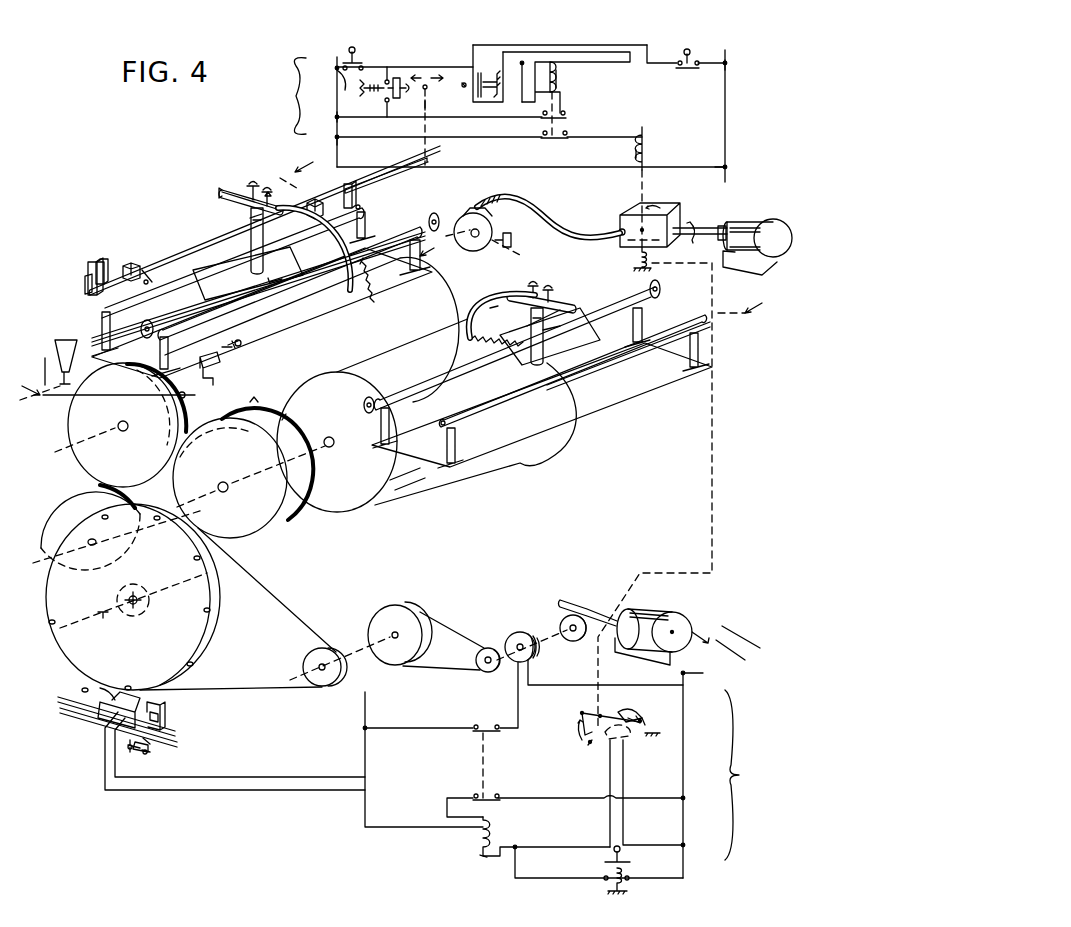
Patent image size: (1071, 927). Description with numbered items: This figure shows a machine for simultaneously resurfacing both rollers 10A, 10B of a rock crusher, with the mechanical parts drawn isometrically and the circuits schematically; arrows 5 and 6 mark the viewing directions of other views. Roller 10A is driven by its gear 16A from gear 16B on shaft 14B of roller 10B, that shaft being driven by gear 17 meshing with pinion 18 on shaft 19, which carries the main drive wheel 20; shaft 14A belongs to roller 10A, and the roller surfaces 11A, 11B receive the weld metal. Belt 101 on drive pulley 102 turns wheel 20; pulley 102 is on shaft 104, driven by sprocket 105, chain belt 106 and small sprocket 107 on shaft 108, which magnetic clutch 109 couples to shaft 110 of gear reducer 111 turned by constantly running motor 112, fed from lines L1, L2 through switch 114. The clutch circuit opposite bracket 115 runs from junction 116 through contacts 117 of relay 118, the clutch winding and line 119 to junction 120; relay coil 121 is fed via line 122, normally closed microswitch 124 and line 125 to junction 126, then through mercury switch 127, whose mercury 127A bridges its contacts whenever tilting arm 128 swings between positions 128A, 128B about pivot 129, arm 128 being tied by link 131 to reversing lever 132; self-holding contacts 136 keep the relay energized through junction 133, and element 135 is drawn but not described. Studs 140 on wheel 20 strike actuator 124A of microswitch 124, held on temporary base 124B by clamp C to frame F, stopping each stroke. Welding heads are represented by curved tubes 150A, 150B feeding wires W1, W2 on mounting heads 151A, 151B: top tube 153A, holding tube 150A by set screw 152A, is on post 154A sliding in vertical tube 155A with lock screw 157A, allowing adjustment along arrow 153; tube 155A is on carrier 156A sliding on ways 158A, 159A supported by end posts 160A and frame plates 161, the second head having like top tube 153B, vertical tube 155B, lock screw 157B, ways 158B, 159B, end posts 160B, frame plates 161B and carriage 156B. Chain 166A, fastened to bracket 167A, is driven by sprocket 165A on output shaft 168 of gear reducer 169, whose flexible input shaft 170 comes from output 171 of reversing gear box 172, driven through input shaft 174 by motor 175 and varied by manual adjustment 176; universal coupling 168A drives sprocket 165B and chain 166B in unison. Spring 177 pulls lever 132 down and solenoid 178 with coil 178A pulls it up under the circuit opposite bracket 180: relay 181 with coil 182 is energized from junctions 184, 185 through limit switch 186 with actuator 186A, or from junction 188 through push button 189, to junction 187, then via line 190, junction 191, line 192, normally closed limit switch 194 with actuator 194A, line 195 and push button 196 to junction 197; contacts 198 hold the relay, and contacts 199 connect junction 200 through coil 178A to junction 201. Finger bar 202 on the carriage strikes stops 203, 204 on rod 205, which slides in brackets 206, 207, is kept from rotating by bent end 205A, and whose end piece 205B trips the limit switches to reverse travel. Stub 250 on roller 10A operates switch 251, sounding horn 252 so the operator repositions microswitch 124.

The section line 5- 5 is at (527, 229).
The section line 6- 6 is at (241, 314).
The first winding drum 10A is at (180, 395).
The second winding drum 10B is at (339, 469).
The drum flute 11A is at (255, 394).
The drum flute 11B is at (290, 412).
The drum shaft 14A is at (118, 430).
The drum shaft 14B is at (300, 455).
The drum flange disc 16A is at (84, 421).
The drum flange disc 16B is at (182, 486).
The rear drive disc 17 is at (65, 512).
The disc hub 18 is at (142, 588).
The hub pin 19 is at (103, 618).
The front drive disc 20 is at (215, 626).
The drive belt 101 is at (278, 605).
The pulley 102 is at (315, 662).
The pulley assembly 104 is at (352, 650).
The pulley 105 is at (405, 620).
The belt 106 is at (455, 632).
The pulley 107 is at (488, 672).
The pulley 108 is at (510, 645).
The stepped pulley 109 is at (535, 648).
The pulley 110 is at (558, 628).
The motor shaft 111 is at (582, 608).
The motor 112 is at (648, 625).
The motor output 114 is at (720, 640).
The control circuit 115 is at (748, 775).
The wire 116 is at (370, 728).
The switch 117 is at (482, 728).
The relay coil 118 is at (474, 842).
The wire 119 is at (572, 685).
The wire 120 is at (686, 675).
The relay 121 is at (478, 853).
The wire 122 is at (180, 780).
The carriage bracket 124 is at (165, 710).
The carriage block 124A is at (138, 698).
The guide rails 124B is at (95, 712).
The wire 125 is at (178, 795).
The wire 126 is at (517, 850).
The relay armature 127 is at (640, 715).
The contact 127A is at (645, 720).
The switch arm 128 is at (606, 712).
The switch arm position 128A is at (590, 703).
The switch arm position 128B is at (590, 745).
The ground 129 is at (655, 730).
The mechanical linkage 131 is at (714, 486).
The shaft 132 is at (683, 222).
The relay contacts 133 is at (683, 795).
The switch 135 is at (650, 875).
The switch 136 is at (478, 795).
The wire 140 is at (100, 688).
The flexible hose 150A is at (345, 280).
The flexible hose 150B is at (482, 298).
The winding head 151A is at (218, 178).
The winding head 151B is at (485, 305).
The clamp screw 152A is at (252, 186).
The arm 153 is at (277, 195).
The arm 153A is at (270, 185).
The arm 153B is at (545, 290).
The clamp 154A is at (228, 196).
The post 155A is at (252, 240).
The post 155B is at (540, 368).
The slide plate 156A is at (300, 300).
The slide plate 156B is at (565, 372).
The bracket 157A is at (250, 222).
The bracket 157B is at (548, 335).
The guide bar 158A is at (372, 268).
The guide bar 158B is at (620, 350).
The end plate 159A is at (88, 268).
The guide rod 159B is at (425, 380).
The stanchion 160A is at (420, 252).
The stanchion 160B is at (638, 330).
The base plate 161 is at (420, 275).
The base plate 161B is at (655, 340).
The pulley 165A is at (433, 214).
The pulley 165B is at (660, 290).
The roller 166A is at (225, 330).
The roller 166B is at (605, 312).
The pad 167A is at (286, 280).
The cam 168 is at (462, 212).
The cam follower 168A is at (506, 240).
The coil 169 is at (492, 198).
The flexible cable 170 is at (542, 225).
The cable end 171 is at (619, 225).
The gear box 172 is at (633, 212).
The coupling 174 is at (727, 228).
The motor 175 is at (768, 232).
The rotation 176 is at (655, 208).
The spring 177 is at (640, 250).
The solenoid 178 is at (647, 140).
The solenoid coil 178A is at (650, 152).
The control circuit 180 is at (290, 96).
The armature 181 is at (562, 94).
The coil 182 is at (551, 52).
The wire 184 is at (337, 117).
The spring 185 is at (380, 113).
The switch 186 is at (399, 76).
The switch link 186A is at (416, 68).
The contact 187 is at (385, 80).
The switch 188 is at (340, 68).
The wire 189 is at (345, 90).
The movement arrows 190 is at (433, 70).
The wire 191 is at (513, 95).
The conductor 192 is at (610, 62).
The relay 194 is at (480, 72).
The contact 194A is at (462, 86).
The wire 195 is at (615, 45).
The switch 196 is at (690, 75).
The wire 197 is at (727, 67).
The switch 198 is at (566, 118).
The switch 199 is at (560, 142).
The wire 200 is at (340, 142).
The wire 201 is at (730, 168).
The guide rod 202 is at (215, 243).
The slide block 203 is at (130, 265).
The slide block 204 is at (333, 182).
The stop 205 is at (150, 275).
The stop 205A is at (88, 290).
The link 205B is at (428, 110).
The end block 206 is at (360, 193).
The block 207 is at (100, 262).
The screw 250 is at (245, 362).
The sensor block 251 is at (240, 370).
The hopper 252 is at (58, 345).
The clamp C is at (155, 745).
The fixture F is at (172, 738).
The line 1 L1 is at (395, 382).
The line 2 L2 is at (411, 358).
The wire 1 W1 is at (362, 302).
The wire 2 W2 is at (468, 340).